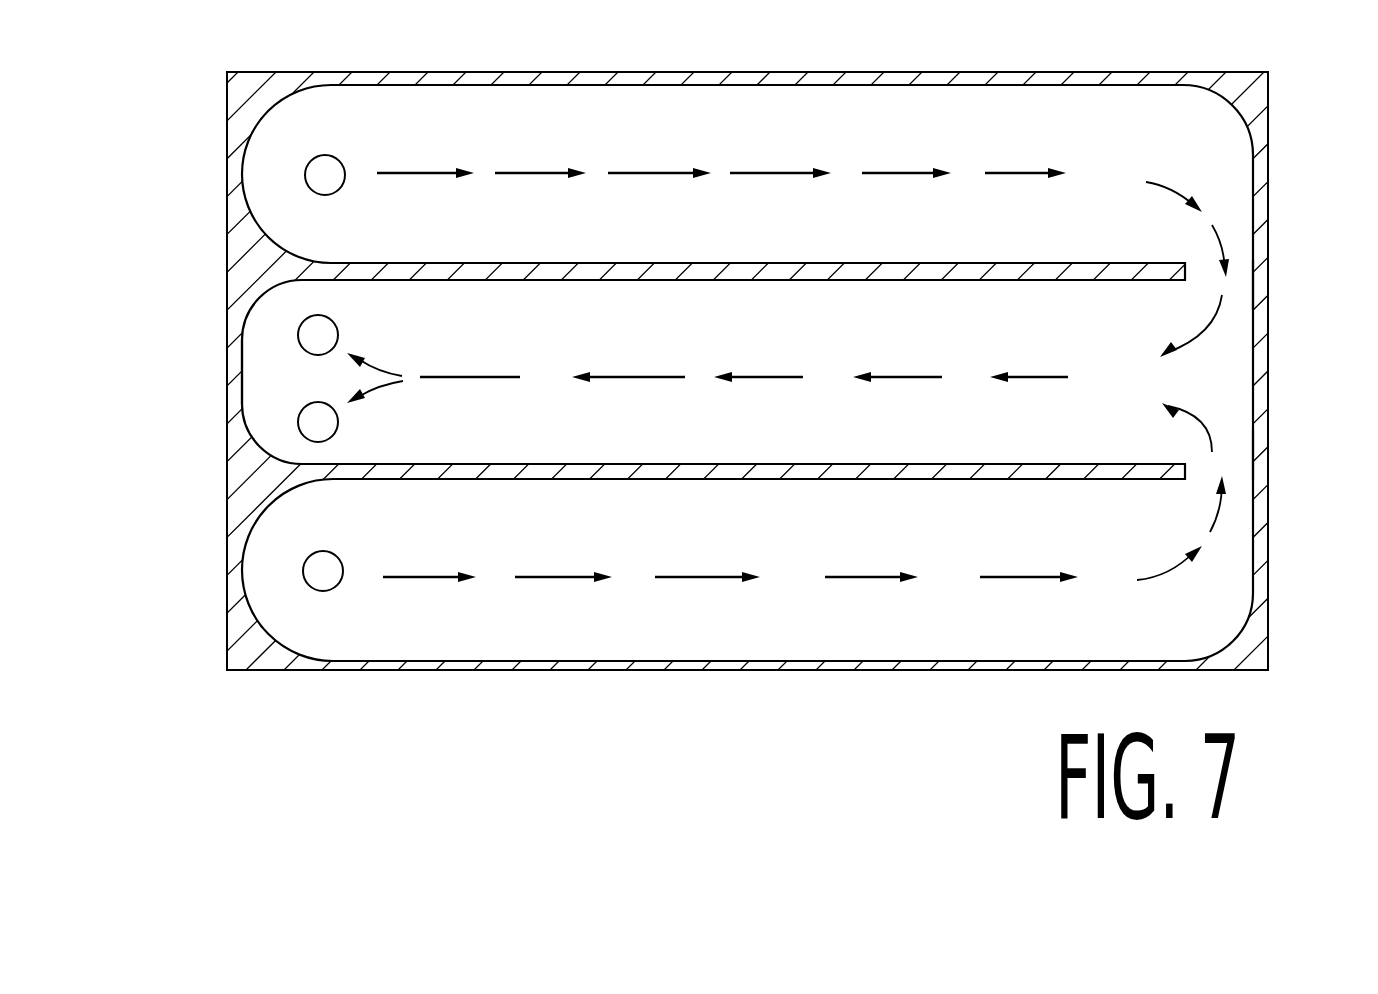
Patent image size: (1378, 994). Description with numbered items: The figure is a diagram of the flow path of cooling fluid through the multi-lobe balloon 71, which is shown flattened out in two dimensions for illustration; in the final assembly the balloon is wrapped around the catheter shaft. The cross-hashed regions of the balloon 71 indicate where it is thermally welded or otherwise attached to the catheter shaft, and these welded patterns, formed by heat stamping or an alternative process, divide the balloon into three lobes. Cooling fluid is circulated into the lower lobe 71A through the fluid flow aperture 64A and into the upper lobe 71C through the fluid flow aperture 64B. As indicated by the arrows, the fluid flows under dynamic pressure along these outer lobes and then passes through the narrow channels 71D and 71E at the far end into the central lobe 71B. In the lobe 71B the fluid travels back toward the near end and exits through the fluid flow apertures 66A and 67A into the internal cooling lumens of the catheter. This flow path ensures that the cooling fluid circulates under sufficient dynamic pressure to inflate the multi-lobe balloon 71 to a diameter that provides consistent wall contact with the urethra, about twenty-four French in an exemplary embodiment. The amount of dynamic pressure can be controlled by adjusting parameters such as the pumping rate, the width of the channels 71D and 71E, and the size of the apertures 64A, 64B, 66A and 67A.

The multi-lobe balloon 71 is at (797, 60).
The lobe 71A is at (242, 610).
The lobe 71B is at (242, 380).
The lobe 71C is at (243, 150).
The narrow channel 71D is at (1258, 470).
The narrow channel 71E is at (1258, 272).
The fluid flow aperture 64A is at (305, 565).
The fluid flow aperture 64B is at (305, 178).
The fluid flow aperture 66A is at (298, 422).
The fluid flow aperture 67A is at (303, 323).